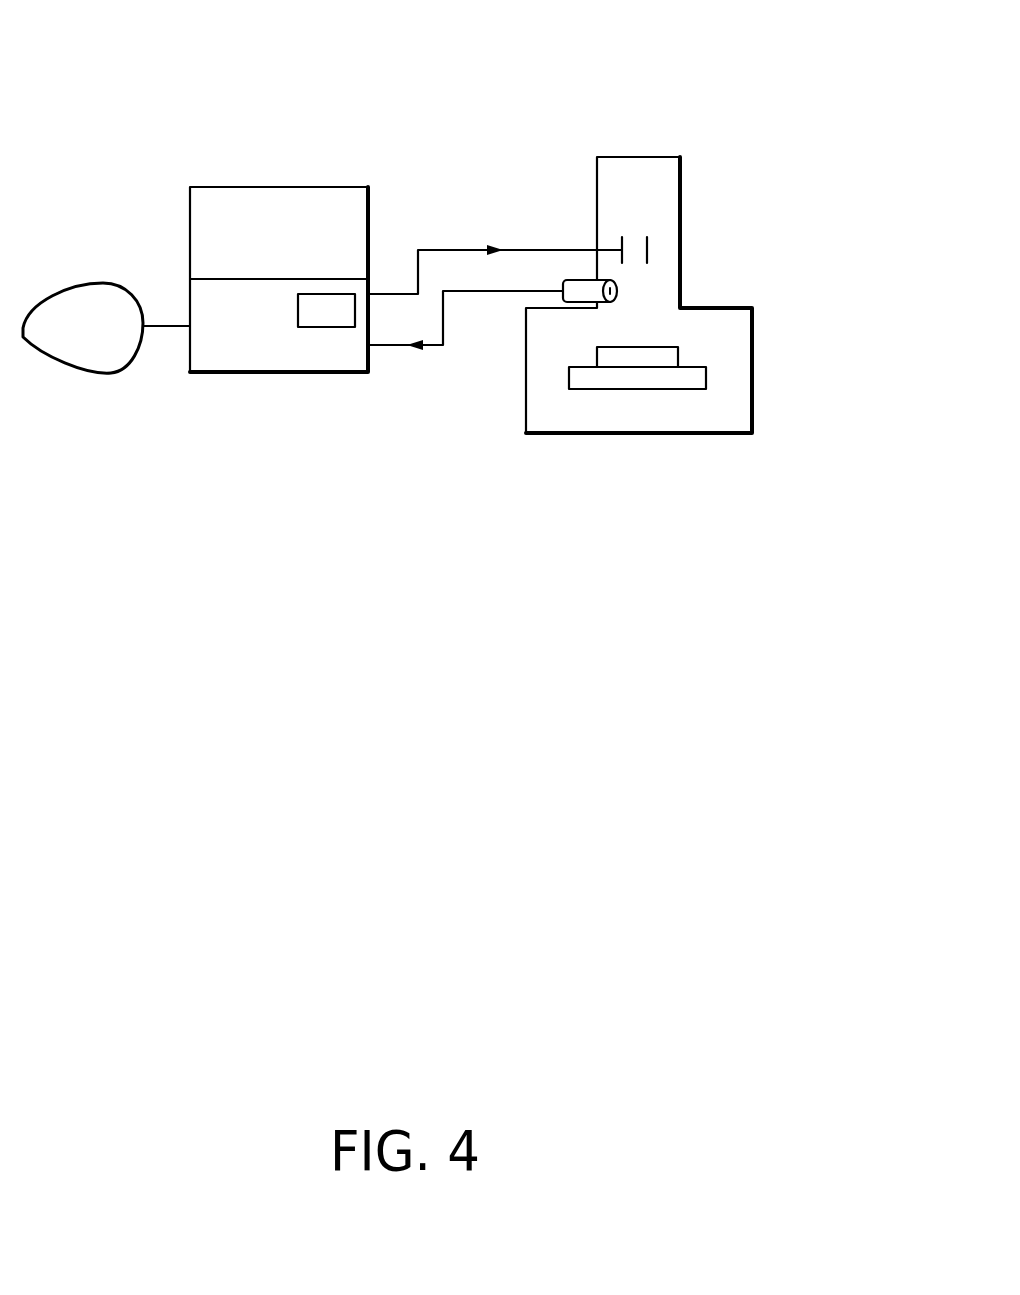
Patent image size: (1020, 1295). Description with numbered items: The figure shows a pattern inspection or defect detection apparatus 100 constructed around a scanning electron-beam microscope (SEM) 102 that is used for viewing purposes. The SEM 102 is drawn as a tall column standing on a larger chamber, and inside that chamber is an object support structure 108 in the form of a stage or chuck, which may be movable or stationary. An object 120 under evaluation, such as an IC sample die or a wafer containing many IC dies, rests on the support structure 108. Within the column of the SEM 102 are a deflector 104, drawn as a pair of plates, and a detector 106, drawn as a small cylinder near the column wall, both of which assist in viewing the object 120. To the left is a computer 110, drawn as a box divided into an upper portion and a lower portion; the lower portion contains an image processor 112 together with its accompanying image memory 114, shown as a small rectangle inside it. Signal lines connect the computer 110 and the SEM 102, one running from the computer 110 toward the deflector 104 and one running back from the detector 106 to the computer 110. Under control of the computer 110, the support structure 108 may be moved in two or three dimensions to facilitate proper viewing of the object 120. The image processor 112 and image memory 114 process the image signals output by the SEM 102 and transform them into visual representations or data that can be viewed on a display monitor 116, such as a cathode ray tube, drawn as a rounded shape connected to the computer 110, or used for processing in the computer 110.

The pattern inspection apparatus 100 is at (767, 111).
The scanning electron-beam microscope 102 is at (635, 173).
The deflector 104 is at (633, 237).
The detector 106 is at (617, 292).
The object support structure 108 is at (682, 375).
The computer 110 is at (207, 213).
The image processor 112 is at (212, 312).
The image memory 114 is at (328, 305).
The display monitor 116 is at (113, 358).
The object 120 is at (665, 360).